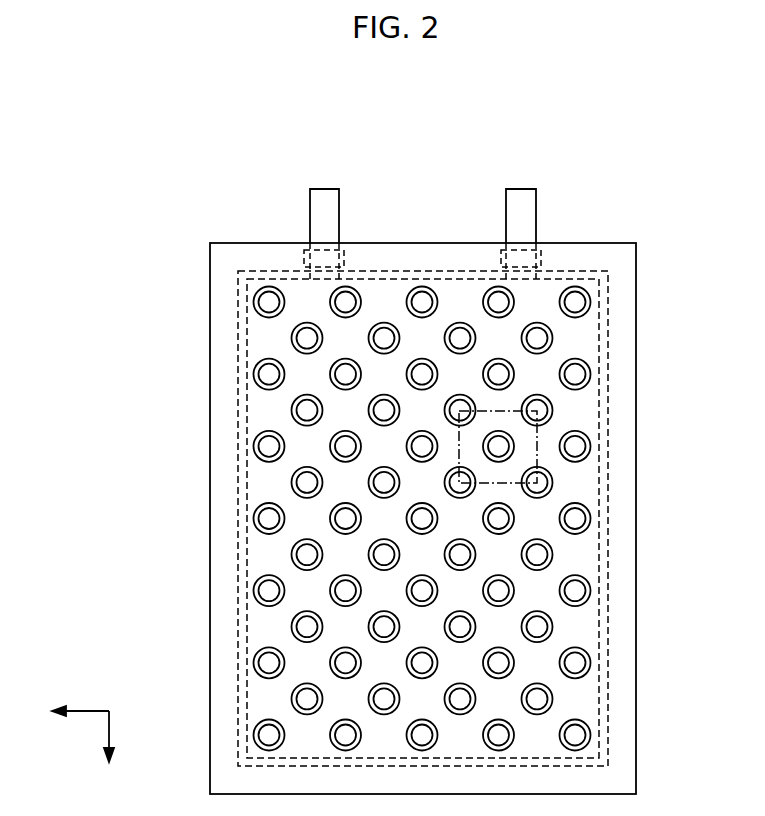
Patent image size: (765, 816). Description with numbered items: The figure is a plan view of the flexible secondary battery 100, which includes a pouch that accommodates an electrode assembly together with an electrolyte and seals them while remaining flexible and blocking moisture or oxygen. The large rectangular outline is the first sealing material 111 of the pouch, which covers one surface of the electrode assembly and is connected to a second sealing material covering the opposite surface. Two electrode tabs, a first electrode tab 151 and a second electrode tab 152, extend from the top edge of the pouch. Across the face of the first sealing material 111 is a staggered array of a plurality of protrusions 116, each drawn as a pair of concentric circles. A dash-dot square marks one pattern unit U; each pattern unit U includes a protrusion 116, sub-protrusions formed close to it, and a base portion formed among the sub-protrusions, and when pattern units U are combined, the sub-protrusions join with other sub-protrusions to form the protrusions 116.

The flexible secondary battery 100 is at (663, 190).
The first sealing material 111 is at (217, 458).
The protrusion 116 is at (262, 301).
The first electrode tab 151 is at (324, 197).
The second electrode tab 152 is at (521, 197).
The pattern unit U is at (537, 447).